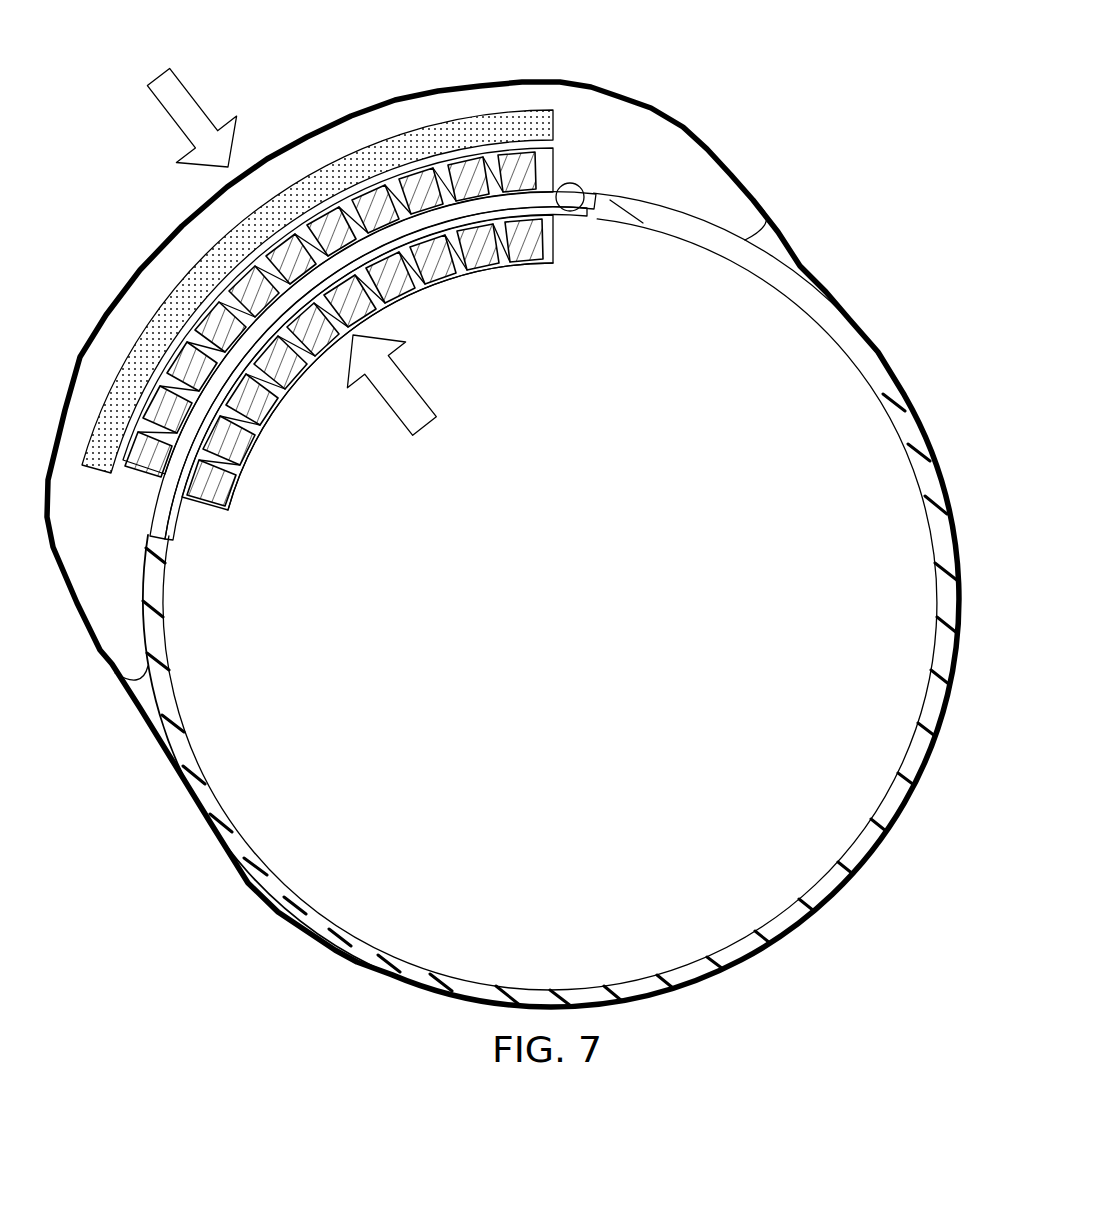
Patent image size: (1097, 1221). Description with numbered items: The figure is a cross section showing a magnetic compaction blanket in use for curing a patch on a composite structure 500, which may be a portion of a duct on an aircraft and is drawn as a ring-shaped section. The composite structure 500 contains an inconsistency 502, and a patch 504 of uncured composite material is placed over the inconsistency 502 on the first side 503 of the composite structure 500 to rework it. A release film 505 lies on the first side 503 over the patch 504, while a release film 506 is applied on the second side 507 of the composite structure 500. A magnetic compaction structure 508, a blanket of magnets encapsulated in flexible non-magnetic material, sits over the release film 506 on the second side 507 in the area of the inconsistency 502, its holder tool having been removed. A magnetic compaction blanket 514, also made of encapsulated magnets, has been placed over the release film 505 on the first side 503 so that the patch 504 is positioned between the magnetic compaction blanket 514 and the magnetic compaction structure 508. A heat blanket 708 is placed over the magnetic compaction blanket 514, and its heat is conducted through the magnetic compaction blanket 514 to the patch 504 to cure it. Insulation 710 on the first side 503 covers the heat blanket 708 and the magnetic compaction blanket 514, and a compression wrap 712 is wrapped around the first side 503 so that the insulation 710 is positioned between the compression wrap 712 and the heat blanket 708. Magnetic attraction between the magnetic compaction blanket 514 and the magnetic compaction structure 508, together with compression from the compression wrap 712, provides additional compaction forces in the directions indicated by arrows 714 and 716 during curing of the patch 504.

The composite structure 500 is at (146, 715).
The first side 503 is at (168, 747).
The second side 507 is at (195, 778).
The inconsistency 502 is at (320, 365).
The patch 504 is at (273, 385).
The release film 505 is at (580, 211).
The release film 506 is at (535, 215).
The magnetic compaction structure 508 is at (480, 276).
The magnetic compaction blanket 514 is at (556, 166).
The heat blanket 708 is at (432, 126).
The insulation 710 is at (680, 145).
The compression wrap 712 is at (785, 238).
The arrow 714 is at (157, 74).
The arrow 716 is at (417, 385).